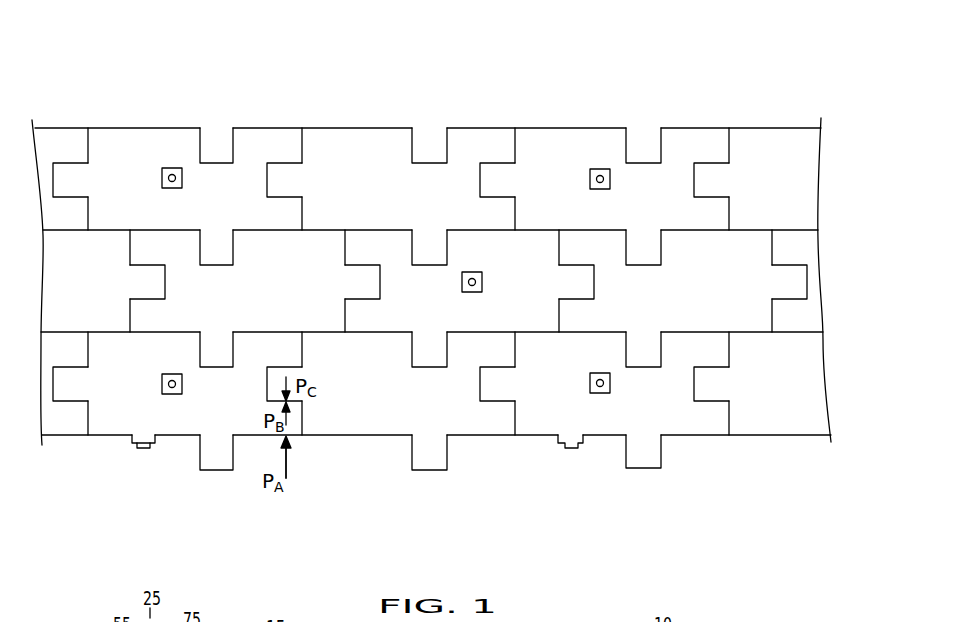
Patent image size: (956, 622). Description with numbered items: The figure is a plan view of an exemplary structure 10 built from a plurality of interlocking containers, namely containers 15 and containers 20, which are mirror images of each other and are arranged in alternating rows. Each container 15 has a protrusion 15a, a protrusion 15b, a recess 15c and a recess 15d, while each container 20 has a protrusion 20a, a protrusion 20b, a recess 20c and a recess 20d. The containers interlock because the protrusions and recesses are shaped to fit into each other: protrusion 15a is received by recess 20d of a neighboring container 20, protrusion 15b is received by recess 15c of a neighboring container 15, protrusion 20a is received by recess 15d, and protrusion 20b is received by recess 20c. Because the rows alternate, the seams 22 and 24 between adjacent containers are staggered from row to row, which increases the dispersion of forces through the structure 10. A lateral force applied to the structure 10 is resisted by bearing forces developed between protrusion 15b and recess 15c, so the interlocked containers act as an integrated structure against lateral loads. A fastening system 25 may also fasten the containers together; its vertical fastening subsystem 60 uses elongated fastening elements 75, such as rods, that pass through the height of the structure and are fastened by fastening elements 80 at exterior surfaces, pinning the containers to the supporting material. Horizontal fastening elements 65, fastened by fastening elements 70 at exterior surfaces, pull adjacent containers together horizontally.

The structure 10 is at (326, 73).
The container 15 is at (63, 143).
The protrusion 15a is at (427, 237).
The protrusion 15b is at (286, 178).
The recess 15c is at (487, 170).
The recess 15d is at (428, 160).
The container 20 is at (78, 255).
The protrusion 20a is at (428, 353).
The protrusion 20b is at (357, 280).
The recess 20c is at (590, 273).
The recess 20d is at (433, 263).
The seam 22 is at (514, 401).
The seam 24 is at (558, 322).
The fastening system 25 is at (175, 108).
The vertical fastening subsystem 60 is at (213, 106).
The fastening element 65 is at (147, 449).
The fastening element 70 is at (137, 449).
The fastening element 75 is at (172, 176).
The fastening element 80 is at (163, 172).